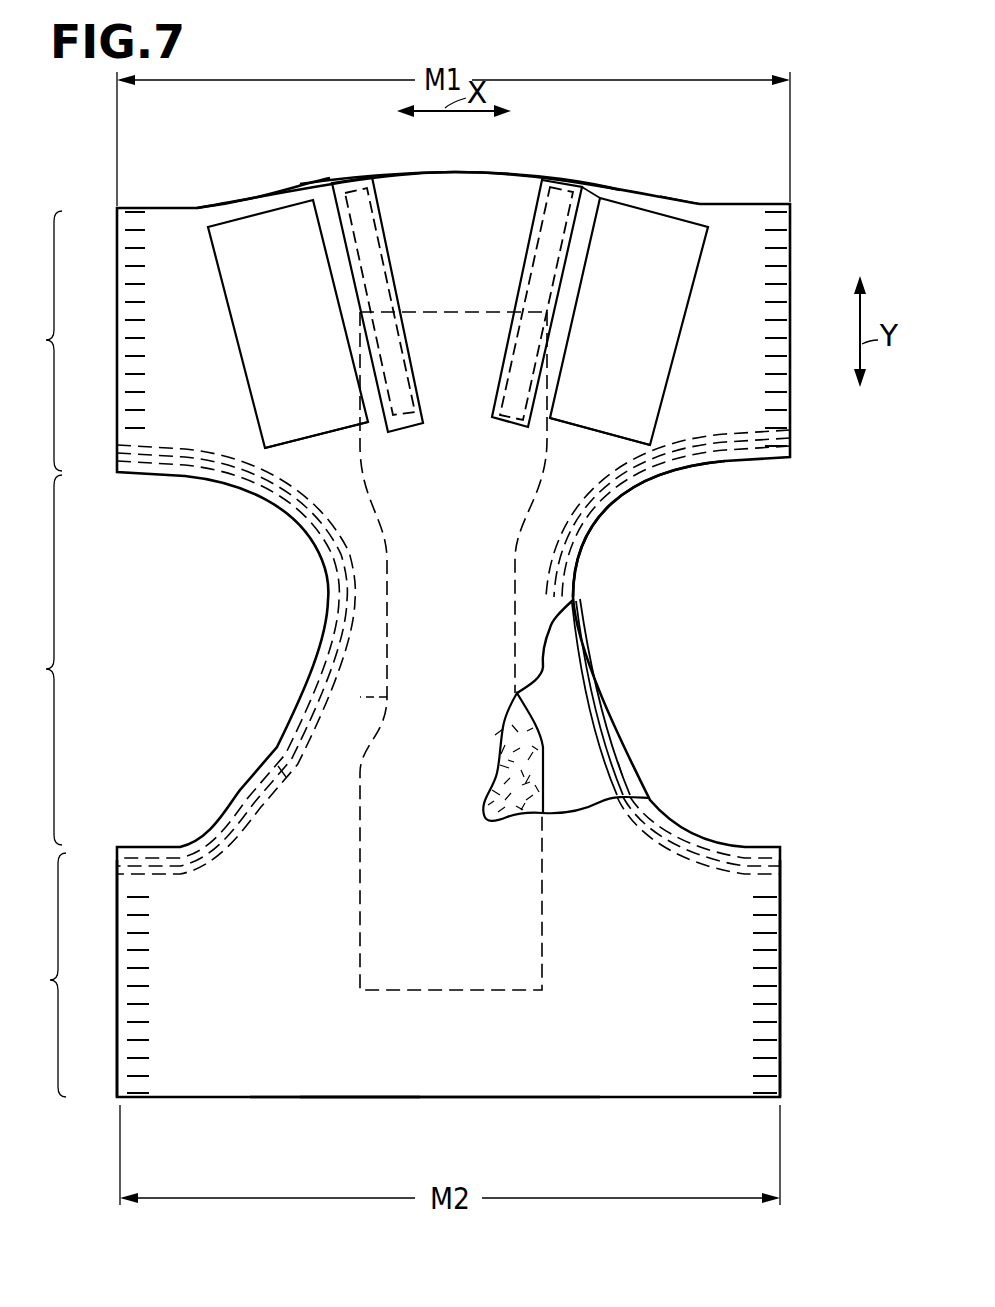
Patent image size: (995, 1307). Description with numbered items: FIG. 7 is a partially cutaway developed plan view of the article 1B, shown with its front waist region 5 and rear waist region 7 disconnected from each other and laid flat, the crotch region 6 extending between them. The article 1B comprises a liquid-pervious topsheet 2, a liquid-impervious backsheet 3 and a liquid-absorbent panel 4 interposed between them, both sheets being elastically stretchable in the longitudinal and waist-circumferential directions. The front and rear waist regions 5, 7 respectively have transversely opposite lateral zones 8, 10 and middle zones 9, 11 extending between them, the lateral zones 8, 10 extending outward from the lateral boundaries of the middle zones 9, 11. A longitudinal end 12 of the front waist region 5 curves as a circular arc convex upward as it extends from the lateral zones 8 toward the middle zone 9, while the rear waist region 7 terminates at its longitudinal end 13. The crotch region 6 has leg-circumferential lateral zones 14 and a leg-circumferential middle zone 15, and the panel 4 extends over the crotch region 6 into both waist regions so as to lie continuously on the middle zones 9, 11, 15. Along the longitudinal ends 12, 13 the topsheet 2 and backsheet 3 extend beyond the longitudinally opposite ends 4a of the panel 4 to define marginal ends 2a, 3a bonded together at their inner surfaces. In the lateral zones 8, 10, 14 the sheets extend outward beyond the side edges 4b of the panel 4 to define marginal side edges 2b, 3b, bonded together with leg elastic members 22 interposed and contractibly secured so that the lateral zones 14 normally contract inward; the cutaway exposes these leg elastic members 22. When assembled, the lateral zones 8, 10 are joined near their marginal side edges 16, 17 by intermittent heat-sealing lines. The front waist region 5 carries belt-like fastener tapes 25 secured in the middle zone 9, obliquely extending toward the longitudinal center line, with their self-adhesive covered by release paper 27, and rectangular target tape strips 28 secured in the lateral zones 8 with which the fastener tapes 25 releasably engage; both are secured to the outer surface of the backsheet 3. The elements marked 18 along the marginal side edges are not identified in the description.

The article 1B is at (661, 166).
The liquid-pervious topsheet 2 is at (563, 730).
The marginal end of topsheet 2a is at (590, 206).
The marginal side edge of topsheet 2b is at (330, 560).
The liquid-impervious backsheet 3 is at (553, 500).
The marginal end of backsheet 3a is at (680, 212).
The marginal side edge of backsheet 3b is at (367, 617).
The liquid-absorbent panel 4 is at (537, 787).
The longitudinally opposite ends of panel 4a is at (440, 312).
The transversely opposite side edges of panel 4b is at (385, 704).
The front waist region 5 is at (39, 341).
The crotch region 6 is at (41, 660).
The rear waist region 7 is at (46, 975).
The lateral zones of front waist region 8 is at (174, 236).
The middle zone of front waist region 9 is at (446, 215).
The lateral zones of rear waist region 10 is at (183, 1037).
The middle zone of rear waist region 11 is at (445, 1050).
The longitudinal end of front waist region 12 is at (410, 176).
The longitudinal end of rear waist region 13 is at (373, 1097).
The lateral zones of crotch region 14 is at (370, 668).
The middle zone of crotch region 15 is at (460, 626).
The marginal side edge of front waist region 16 is at (122, 338).
The marginal side edge of rear waist region 17 is at (120, 964).
The waist elastic end portions 18 is at (128, 235).
The leg elastic members 22 is at (278, 766).
The fastener tapes 25 is at (350, 200).
The release paper 27 is at (333, 206).
The target tape strips 28 is at (280, 410).